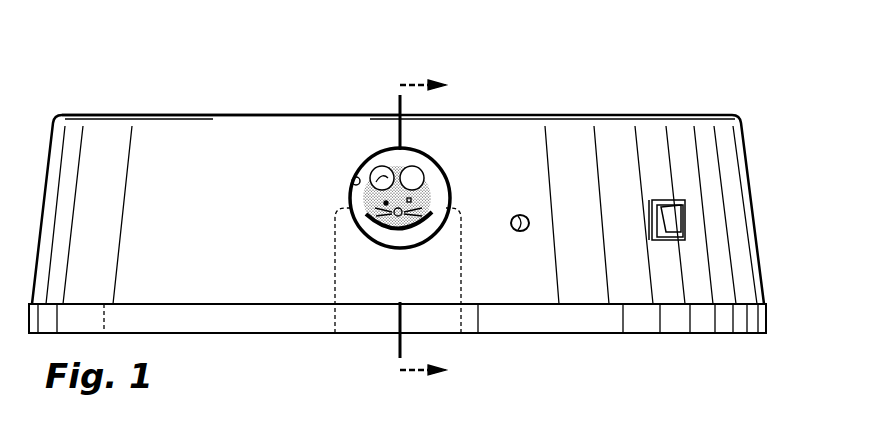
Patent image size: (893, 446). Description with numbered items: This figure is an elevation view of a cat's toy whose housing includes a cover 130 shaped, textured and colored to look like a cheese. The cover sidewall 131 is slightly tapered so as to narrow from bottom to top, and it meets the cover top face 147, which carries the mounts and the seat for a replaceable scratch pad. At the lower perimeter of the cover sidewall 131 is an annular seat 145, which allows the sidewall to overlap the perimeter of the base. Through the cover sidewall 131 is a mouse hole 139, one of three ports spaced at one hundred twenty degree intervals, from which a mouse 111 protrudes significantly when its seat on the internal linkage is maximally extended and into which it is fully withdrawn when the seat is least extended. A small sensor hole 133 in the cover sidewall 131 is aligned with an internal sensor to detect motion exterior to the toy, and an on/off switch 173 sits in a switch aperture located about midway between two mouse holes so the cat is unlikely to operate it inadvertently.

The cover 130 is at (619, 107).
The cover sidewall 131 is at (232, 145).
The cover top face 147 is at (93, 114).
The annular seat 145 is at (767, 313).
The mouse hole 139 is at (352, 173).
The mouse 111 is at (413, 185).
The sensor hole 133 is at (515, 214).
The on/off switch 173 is at (669, 210).